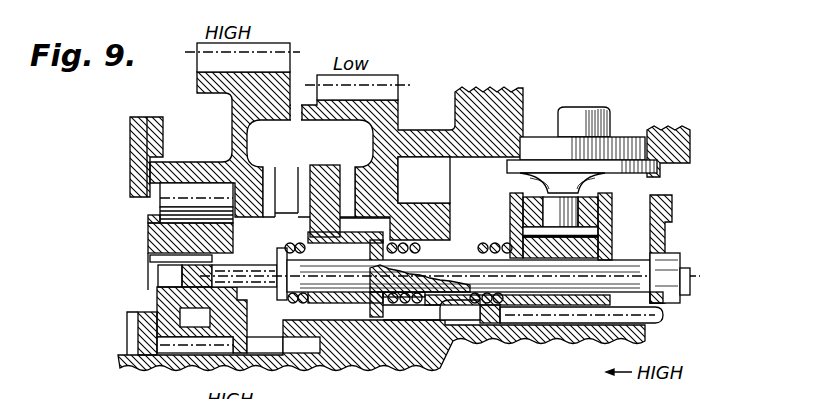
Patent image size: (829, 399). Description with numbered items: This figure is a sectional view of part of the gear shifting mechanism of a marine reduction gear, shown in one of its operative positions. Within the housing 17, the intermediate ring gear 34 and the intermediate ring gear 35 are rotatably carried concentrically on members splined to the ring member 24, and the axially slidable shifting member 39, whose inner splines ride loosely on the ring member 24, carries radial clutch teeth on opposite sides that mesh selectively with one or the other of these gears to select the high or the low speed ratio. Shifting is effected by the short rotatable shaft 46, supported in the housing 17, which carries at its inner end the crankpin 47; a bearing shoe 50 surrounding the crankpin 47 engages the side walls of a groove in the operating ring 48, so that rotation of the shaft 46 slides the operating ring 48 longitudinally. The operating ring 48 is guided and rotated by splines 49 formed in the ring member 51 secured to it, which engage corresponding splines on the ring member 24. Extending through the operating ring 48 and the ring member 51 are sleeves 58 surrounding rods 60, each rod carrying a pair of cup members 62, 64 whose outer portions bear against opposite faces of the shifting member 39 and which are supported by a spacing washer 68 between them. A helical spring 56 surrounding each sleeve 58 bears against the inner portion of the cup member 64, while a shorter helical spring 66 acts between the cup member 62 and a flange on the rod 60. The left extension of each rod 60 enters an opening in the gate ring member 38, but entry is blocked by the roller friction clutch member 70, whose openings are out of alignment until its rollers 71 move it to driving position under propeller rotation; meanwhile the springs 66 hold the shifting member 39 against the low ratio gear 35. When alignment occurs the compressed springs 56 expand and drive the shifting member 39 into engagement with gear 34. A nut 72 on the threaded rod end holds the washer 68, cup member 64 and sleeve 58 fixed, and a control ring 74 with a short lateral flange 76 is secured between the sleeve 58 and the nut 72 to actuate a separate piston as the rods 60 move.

The housing 17 is at (130, 133).
The ring member 24 is at (665, 338).
The intermediate ring gear 34 is at (265, 68).
The intermediate ring gear 35 is at (365, 92).
The ring member 38 is at (160, 303).
The shifting member 39 is at (320, 170).
The shaft 46 is at (595, 120).
The crankpin 47 is at (553, 212).
The operating ring 48 is at (612, 254).
The splines 49 is at (577, 313).
The bearing shoe 50 is at (605, 215).
The ring member 51 is at (613, 253).
The helical spring 56 is at (485, 247).
The sleeve 58 is at (545, 278).
The rod 60 is at (443, 300).
The cup member 62 is at (308, 240).
The cup member 64 is at (383, 194).
The helical spring 66 is at (295, 298).
The spacing washer 68 is at (383, 293).
The friction clutch member 70 is at (172, 233).
The rollers 71 is at (188, 195).
The nut 72 is at (680, 300).
The control ring 74 is at (665, 243).
The flange 76 is at (668, 207).